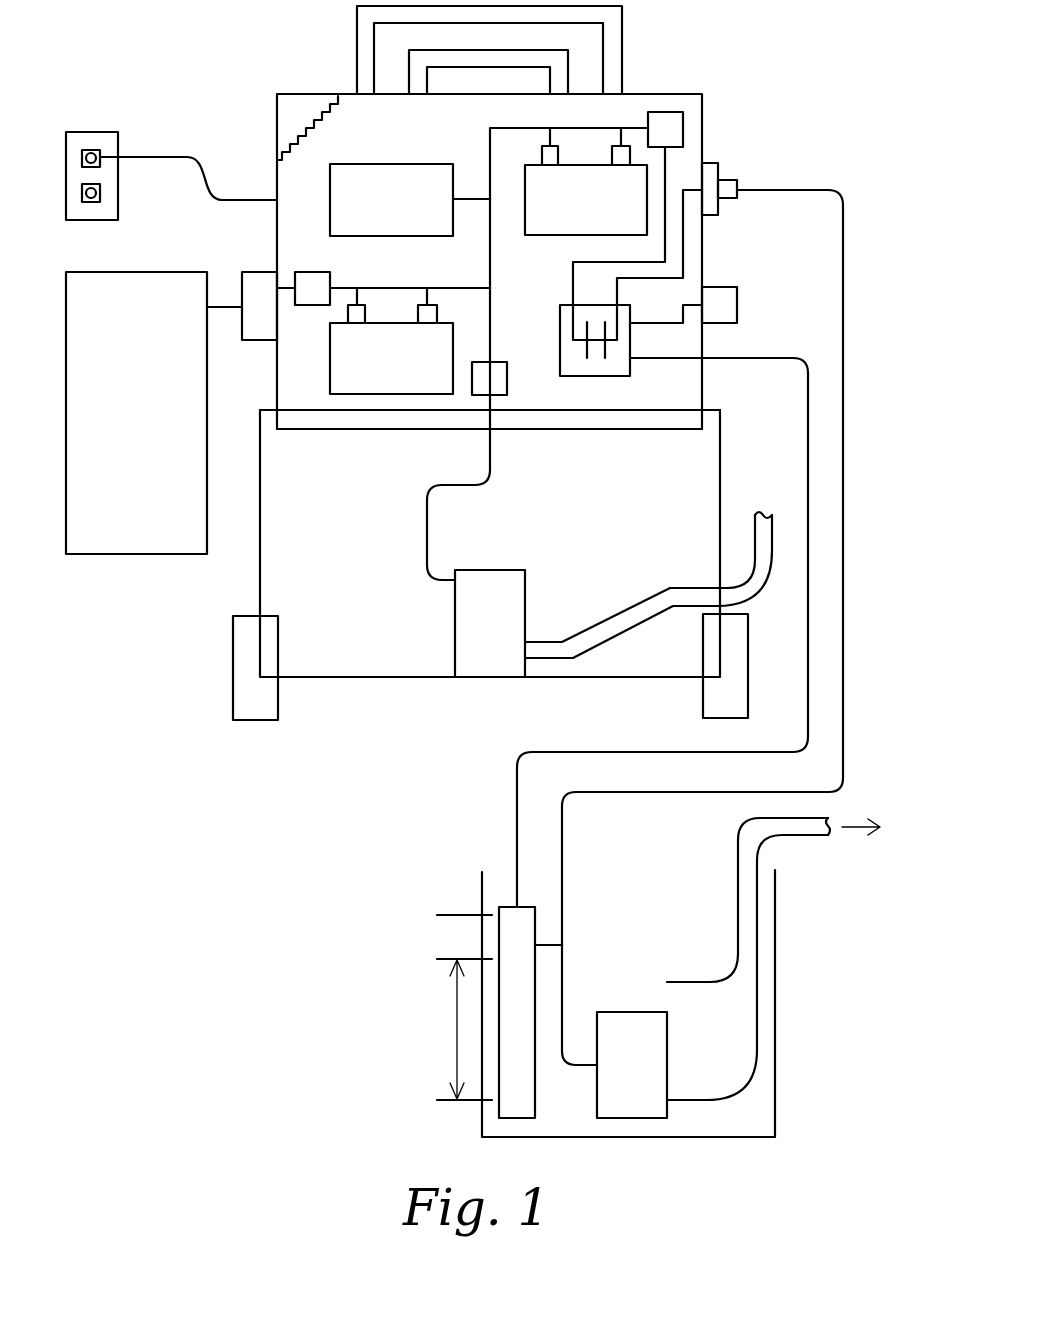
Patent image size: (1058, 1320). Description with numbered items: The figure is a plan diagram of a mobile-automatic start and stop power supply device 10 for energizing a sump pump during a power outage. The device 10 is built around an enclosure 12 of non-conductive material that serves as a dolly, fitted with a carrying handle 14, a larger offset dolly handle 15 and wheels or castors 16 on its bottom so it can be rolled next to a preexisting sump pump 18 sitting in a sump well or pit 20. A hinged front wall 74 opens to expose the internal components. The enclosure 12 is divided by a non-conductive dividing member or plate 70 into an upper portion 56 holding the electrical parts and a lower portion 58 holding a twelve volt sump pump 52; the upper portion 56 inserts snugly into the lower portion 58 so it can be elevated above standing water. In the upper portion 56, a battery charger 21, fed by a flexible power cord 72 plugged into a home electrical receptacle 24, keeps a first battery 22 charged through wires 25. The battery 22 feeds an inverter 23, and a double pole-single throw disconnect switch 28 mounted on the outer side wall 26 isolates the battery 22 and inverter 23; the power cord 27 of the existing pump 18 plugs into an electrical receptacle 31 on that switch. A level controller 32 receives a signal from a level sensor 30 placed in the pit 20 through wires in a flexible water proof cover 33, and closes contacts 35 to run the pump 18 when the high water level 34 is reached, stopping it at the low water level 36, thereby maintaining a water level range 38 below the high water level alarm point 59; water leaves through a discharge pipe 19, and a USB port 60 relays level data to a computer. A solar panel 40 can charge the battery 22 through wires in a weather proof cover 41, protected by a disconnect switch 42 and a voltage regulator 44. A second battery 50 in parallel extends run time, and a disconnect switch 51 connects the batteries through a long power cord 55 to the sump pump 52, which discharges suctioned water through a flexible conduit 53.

The mobile-automatic start and stop power supply device 10 is at (185, 692).
The enclosure 12 is at (488, 385).
The carrying handle 14 is at (490, 40).
The dolly handle 15 is at (622, 32).
The wheels or castors 16 is at (278, 697).
The sump pump 18 is at (645, 1012).
The discharge pipe 19 is at (820, 837).
The sump pump well or pit 20 is at (775, 1098).
The battery charger 21 is at (391, 200).
The first 12 V.D.C. battery 22 is at (586, 181).
The inverter 23 is at (665, 112).
The electrical receptacle 24 is at (118, 201).
The wires 25 is at (490, 145).
The outer side wall 26 is at (702, 235).
The power cord 27 is at (790, 190).
The double pole-single throw disconnect switch 28 is at (710, 163).
The level sensor 30 is at (562, 945).
The electrical receptacle 31 is at (728, 180).
The level controller 32 is at (582, 357).
The flexible water proof cover 33 is at (772, 358).
The high water level 34 is at (449, 960).
The contacts 35 is at (595, 358).
The low water level 36 is at (449, 1101).
The water level range 38 is at (457, 1034).
The solar panel 40 is at (128, 520).
The flexible weather proof cover 41 is at (230, 307).
The double pole-single throw disconnect switch 42 is at (255, 271).
The voltage regulator 44 is at (315, 307).
The second 12 V.D.C. battery 50 is at (391, 341).
The double pole-single throw disconnect switch 51 is at (507, 378).
The 12 V.D.C. sump pump 52 is at (500, 587).
The flexible discharge conduit 53 is at (772, 527).
The power cord 55 is at (427, 540).
The upper portion 56 is at (489, 261).
The lower portion 58 is at (753, 450).
The high water level alarm point 59 is at (470, 1011).
The USB port 60 is at (737, 305).
The dividing member or plate 70 is at (295, 420).
The flexible power cord 72 is at (153, 157).
The hinged front wall 74 is at (288, 126).